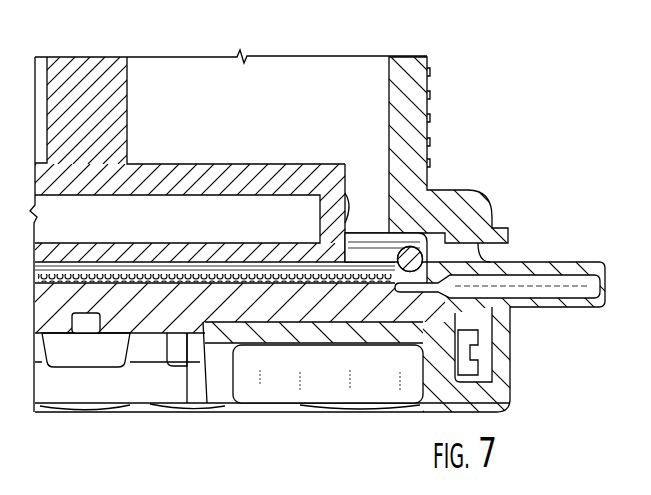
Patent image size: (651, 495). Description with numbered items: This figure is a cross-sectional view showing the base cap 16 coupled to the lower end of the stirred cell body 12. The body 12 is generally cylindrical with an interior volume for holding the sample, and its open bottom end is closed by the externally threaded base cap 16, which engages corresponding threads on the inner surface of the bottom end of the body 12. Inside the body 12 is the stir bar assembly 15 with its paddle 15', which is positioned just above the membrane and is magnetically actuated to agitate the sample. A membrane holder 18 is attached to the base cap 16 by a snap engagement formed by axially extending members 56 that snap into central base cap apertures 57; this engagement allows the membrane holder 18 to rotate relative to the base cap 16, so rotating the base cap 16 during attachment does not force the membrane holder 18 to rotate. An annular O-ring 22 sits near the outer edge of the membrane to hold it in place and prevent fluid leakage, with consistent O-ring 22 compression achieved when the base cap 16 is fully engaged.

The body 12 is at (428, 122).
The stir bar assembly 15 is at (213, 217).
The paddle 15' is at (215, 192).
The base cap 16 is at (508, 405).
The membrane holder 18 is at (442, 312).
The O-ring 22 is at (397, 240).
The axially extending members 56 is at (203, 357).
The central base cap apertures 57 is at (166, 342).